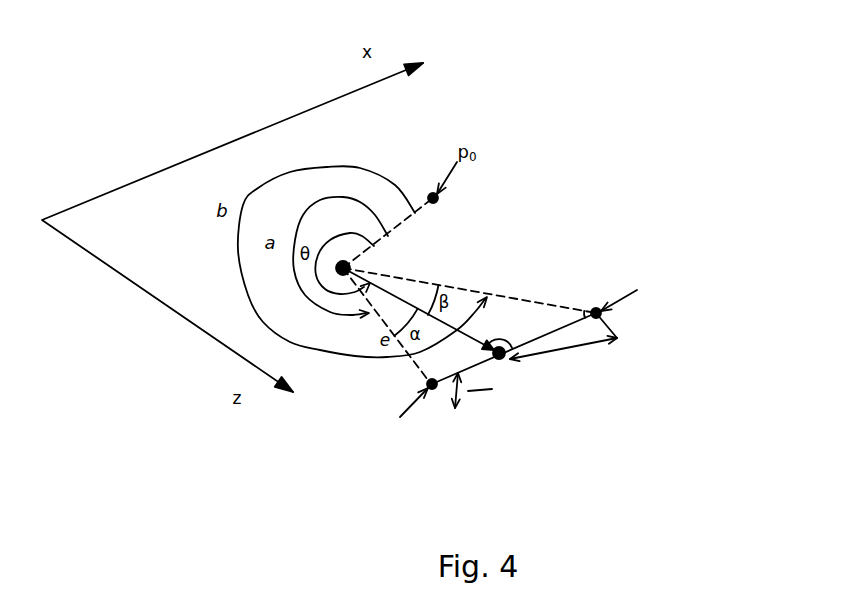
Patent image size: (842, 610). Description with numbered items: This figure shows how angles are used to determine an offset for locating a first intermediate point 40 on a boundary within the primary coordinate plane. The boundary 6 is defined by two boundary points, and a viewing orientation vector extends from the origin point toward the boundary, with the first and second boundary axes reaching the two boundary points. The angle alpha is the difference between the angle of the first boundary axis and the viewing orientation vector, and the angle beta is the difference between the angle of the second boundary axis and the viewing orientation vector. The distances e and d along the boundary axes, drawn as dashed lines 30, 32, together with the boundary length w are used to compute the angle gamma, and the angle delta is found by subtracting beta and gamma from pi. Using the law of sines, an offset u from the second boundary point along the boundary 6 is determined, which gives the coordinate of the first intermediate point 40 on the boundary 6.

The distance e from pupil center to boundary point p6 30 is at (408, 370).
The distance d from pupil center to boundary point p7 32 is at (523, 296).
The first intermediate point 40 is at (507, 357).
The boundary 6 is at (432, 384).